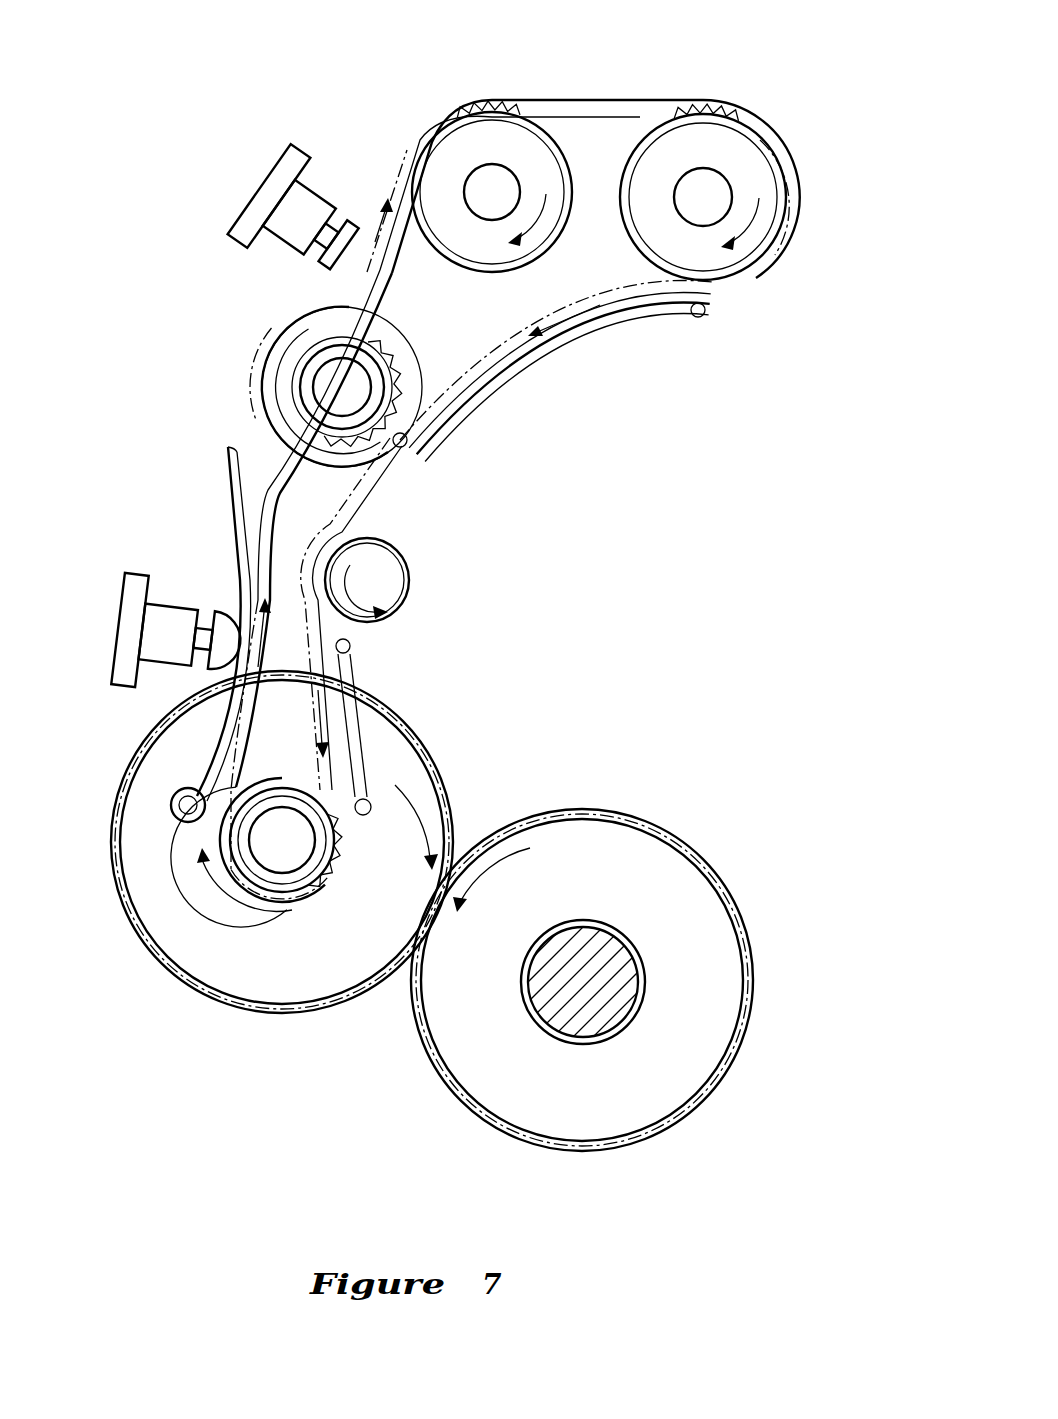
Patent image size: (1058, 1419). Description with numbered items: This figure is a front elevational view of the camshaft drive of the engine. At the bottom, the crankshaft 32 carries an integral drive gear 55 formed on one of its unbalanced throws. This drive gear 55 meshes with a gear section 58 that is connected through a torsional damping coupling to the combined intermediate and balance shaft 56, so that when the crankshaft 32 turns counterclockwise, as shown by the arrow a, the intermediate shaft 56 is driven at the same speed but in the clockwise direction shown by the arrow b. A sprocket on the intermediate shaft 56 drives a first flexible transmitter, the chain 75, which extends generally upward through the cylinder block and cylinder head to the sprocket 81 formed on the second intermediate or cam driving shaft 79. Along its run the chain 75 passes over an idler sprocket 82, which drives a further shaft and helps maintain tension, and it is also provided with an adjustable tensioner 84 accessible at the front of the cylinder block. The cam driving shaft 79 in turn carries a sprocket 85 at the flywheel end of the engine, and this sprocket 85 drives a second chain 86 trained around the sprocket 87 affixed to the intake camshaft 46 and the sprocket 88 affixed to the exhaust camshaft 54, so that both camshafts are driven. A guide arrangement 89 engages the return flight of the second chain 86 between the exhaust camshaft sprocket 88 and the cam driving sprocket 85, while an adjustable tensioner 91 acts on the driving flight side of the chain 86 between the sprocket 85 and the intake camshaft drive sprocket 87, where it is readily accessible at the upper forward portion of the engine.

The second chain 86 is at (637, 100).
The adjustable tensioner 91 is at (267, 200).
The exhaust camshaft 54 is at (718, 183).
The intake camshaft 46 is at (477, 204).
The sprocket 81 is at (398, 352).
The intake camshaft drive sprocket 87 is at (538, 264).
The second intermediate or cam driving shaft 79 is at (330, 397).
The exhaust camshaft sprocket 88 is at (745, 280).
The guide arrangement 89 is at (570, 352).
The sprocket 85 is at (320, 447).
The chain 75 is at (395, 470).
The idler sprocket 82 is at (418, 575).
The adjustable tensioner 84 is at (128, 632).
The combined intermediate and balance shaft 56 is at (278, 815).
The drive gear 55 is at (732, 890).
The gear section 58 is at (158, 970).
The crankshaft 32 is at (567, 1025).